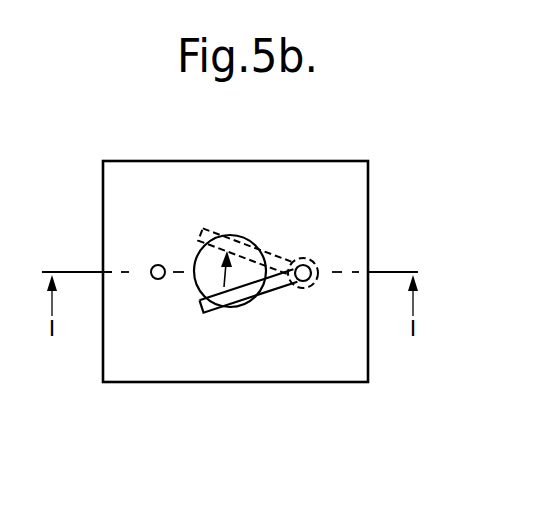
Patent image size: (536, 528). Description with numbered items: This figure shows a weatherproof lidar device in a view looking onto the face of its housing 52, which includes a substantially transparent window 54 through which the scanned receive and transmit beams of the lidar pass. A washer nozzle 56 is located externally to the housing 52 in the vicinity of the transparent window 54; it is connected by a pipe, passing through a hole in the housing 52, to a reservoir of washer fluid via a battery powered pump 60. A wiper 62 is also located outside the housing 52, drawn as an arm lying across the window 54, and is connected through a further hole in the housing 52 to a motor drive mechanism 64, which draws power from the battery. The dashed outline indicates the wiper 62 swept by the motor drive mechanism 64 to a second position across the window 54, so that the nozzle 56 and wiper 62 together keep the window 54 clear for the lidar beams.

The housing 52 is at (348, 161).
The transparent window 54 is at (213, 238).
The washer nozzle 56 is at (164, 250).
The battery powered pump 60 is at (282, 287).
The wiper 62 is at (207, 313).
The motor drive mechanism 64 is at (312, 261).